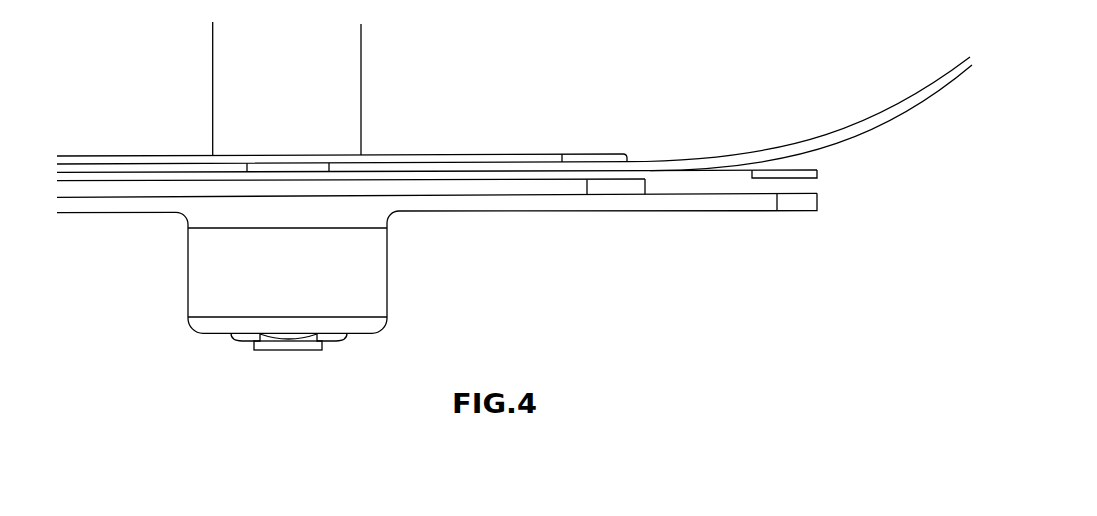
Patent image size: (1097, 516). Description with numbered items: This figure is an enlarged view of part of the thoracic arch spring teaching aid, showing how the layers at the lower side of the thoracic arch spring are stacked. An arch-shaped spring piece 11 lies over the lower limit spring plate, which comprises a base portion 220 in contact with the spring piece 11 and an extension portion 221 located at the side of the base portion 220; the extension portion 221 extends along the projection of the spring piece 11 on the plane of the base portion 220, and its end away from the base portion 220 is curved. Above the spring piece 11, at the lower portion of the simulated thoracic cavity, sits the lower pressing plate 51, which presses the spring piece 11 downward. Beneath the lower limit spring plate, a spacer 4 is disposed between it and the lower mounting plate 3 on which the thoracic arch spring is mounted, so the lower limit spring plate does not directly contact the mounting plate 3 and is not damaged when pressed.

The arch-shaped spring piece 11 is at (885, 115).
The lower pressing plate 51 is at (507, 155).
The base portion 220 is at (540, 175).
The extension portion 221 is at (773, 172).
The spacer 4 is at (415, 190).
The lower mounting plate 3 is at (495, 207).